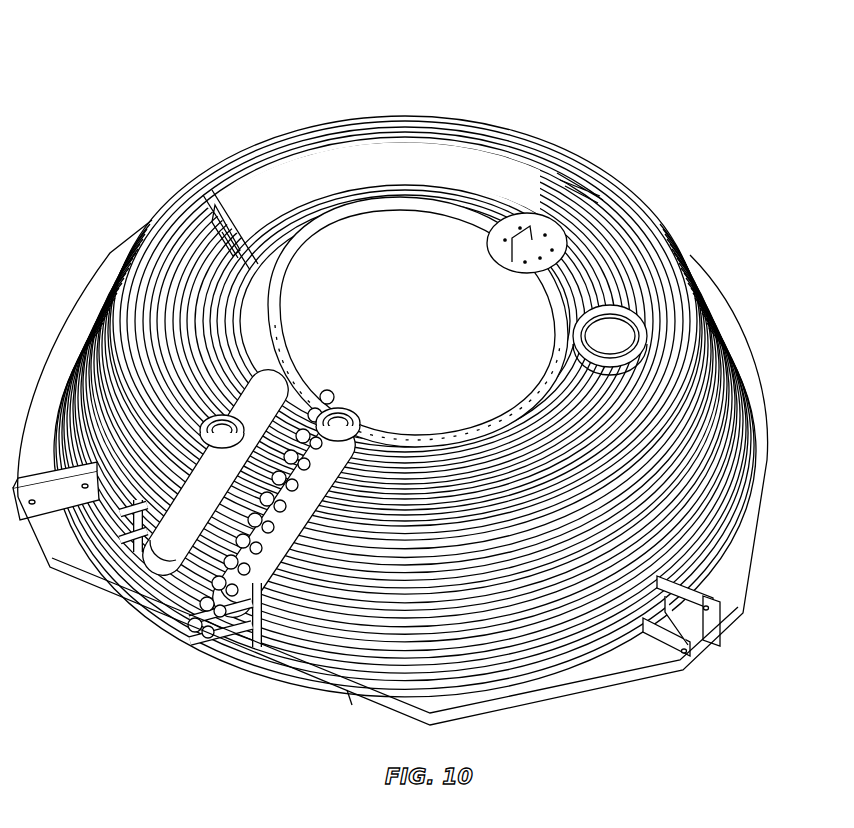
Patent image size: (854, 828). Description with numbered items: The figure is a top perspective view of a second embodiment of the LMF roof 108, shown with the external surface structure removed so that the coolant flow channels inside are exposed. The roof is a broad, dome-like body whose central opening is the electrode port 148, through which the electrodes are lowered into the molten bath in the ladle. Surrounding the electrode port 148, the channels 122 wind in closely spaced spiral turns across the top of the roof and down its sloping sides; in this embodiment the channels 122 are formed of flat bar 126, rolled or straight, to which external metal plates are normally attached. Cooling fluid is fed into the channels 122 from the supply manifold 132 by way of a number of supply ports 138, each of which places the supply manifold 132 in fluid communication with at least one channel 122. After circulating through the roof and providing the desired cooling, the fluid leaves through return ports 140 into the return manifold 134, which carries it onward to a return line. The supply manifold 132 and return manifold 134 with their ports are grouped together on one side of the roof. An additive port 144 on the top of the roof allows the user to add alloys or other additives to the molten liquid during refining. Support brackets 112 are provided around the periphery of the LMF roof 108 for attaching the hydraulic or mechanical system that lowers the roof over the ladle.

The LMF roof 108 is at (605, 132).
The support brackets 112 is at (680, 620).
The channels 122 is at (670, 373).
The flat bar 126 is at (490, 545).
The supply manifold 132 is at (133, 570).
The return manifold 134 is at (213, 613).
The supply ports 138 is at (167, 583).
The return ports 140 is at (227, 620).
The additive ports 144 is at (612, 327).
The electrode port 148 is at (400, 268).